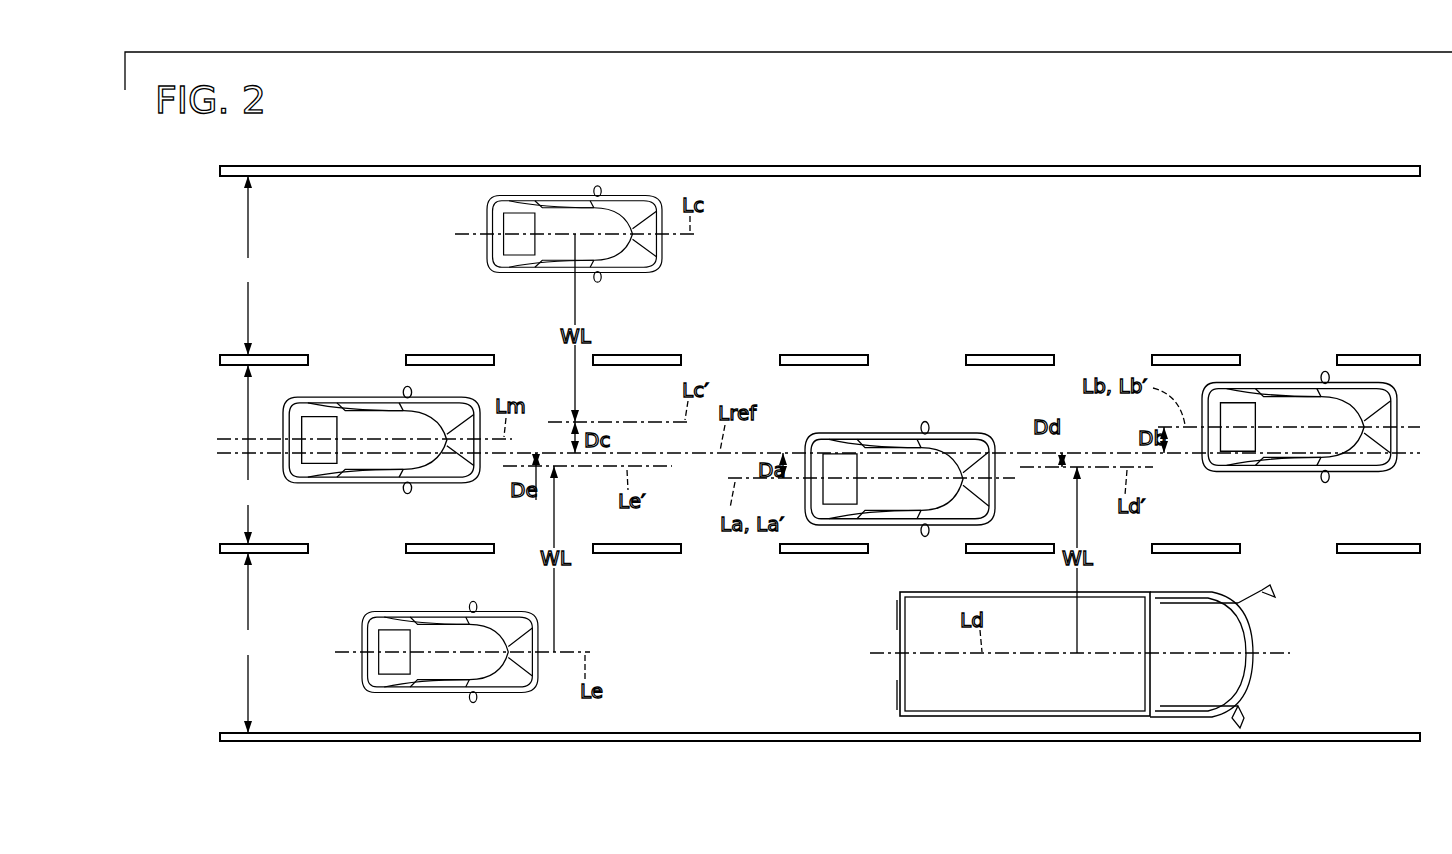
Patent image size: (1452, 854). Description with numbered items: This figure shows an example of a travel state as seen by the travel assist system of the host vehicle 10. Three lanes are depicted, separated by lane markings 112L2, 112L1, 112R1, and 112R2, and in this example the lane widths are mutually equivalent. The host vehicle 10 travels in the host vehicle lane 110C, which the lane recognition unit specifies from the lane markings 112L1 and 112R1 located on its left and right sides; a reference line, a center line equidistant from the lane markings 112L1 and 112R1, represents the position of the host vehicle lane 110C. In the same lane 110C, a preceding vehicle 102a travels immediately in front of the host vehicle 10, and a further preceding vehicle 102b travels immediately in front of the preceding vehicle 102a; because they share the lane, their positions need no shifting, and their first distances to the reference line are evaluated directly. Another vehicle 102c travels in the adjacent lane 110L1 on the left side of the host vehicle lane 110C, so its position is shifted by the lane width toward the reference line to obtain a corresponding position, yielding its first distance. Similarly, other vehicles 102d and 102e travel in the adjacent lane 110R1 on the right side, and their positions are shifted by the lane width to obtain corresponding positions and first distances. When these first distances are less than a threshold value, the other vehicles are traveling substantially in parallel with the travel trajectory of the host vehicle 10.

The host vehicle 10 is at (330, 403).
The preceding vehicle 102a is at (885, 436).
The further preceding vehicle 102b is at (1265, 393).
The other vehicle 102c is at (490, 208).
The other vehicle 102d is at (912, 640).
The other vehicle 102e is at (425, 690).
The adjacent lane 110L1 is at (235, 233).
The host vehicle lane 110C is at (233, 413).
The adjacent lane 110R1 is at (235, 613).
The lane marking 112L2 is at (218, 172).
The lane marking 112L1 is at (218, 360).
The lane marking 112R1 is at (218, 548).
The lane marking 112R2 is at (218, 737).